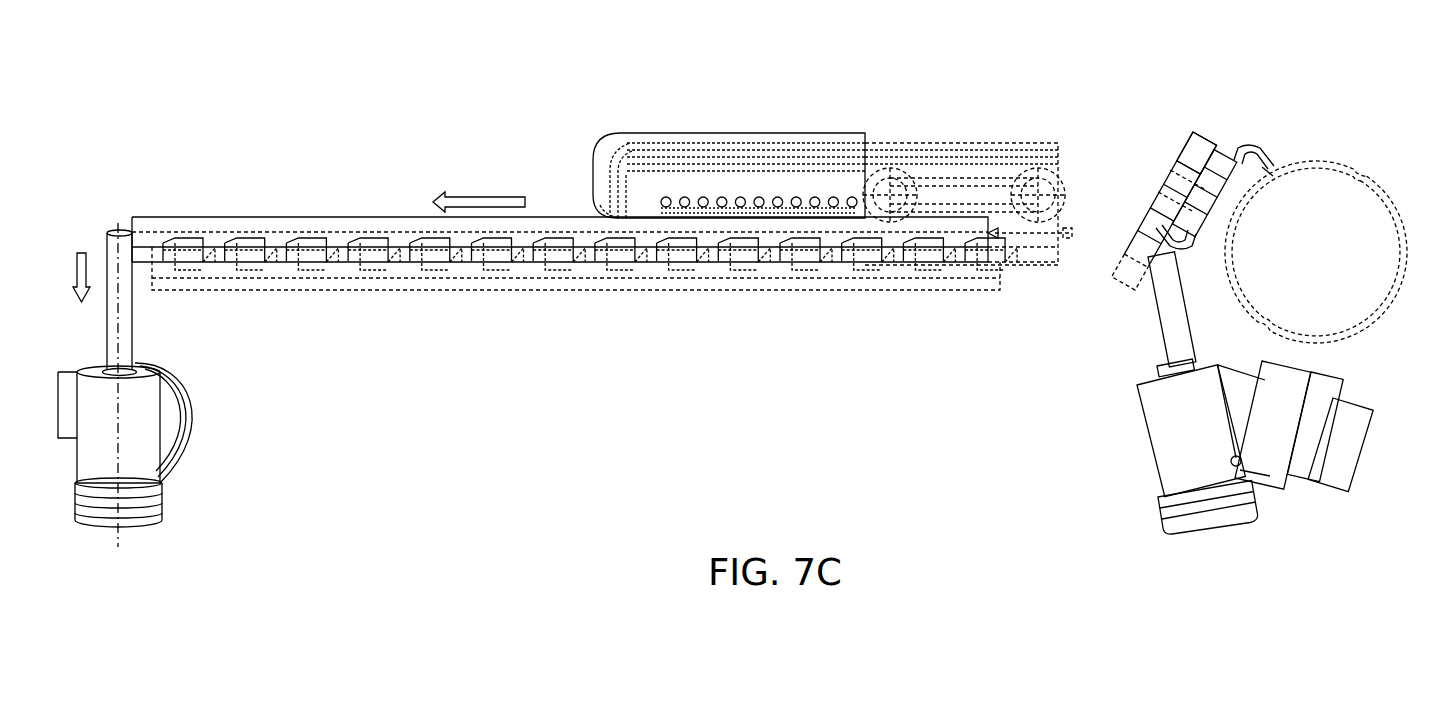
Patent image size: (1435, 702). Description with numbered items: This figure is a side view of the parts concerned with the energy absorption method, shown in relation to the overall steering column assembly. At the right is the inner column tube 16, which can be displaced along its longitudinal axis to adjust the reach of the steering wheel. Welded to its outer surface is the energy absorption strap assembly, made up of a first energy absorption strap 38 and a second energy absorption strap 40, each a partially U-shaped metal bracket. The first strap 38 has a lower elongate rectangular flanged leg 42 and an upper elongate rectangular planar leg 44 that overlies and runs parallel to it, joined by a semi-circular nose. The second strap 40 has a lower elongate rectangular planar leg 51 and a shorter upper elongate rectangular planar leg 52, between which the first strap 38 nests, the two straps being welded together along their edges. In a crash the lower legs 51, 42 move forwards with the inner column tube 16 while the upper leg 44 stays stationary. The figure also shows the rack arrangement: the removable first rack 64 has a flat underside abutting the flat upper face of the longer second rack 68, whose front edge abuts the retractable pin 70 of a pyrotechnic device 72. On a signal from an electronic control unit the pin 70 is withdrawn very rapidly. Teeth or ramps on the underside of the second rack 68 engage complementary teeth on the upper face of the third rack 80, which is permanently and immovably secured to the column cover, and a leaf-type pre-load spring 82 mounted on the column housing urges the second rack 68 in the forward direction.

The inner column tube 16 is at (1390, 207).
The first energy absorption strap 38 is at (998, 132).
The second energy absorption strap 40 is at (643, 130).
The lower elongate rectangular flanged leg 42 is at (1253, 153).
The upper elongate rectangular planar leg 44 is at (1212, 150).
The lower elongate rectangular planar leg 51 is at (1267, 170).
The upper elongate rectangular planar leg 52 is at (1197, 133).
The first rack 64 is at (1150, 215).
The second rack 68 is at (277, 217).
The retractable pin 70 is at (62, 259).
The pyrotechnic device 72 is at (150, 438).
The third rack 80 is at (510, 291).
The pre-load spring 82 is at (1075, 244).